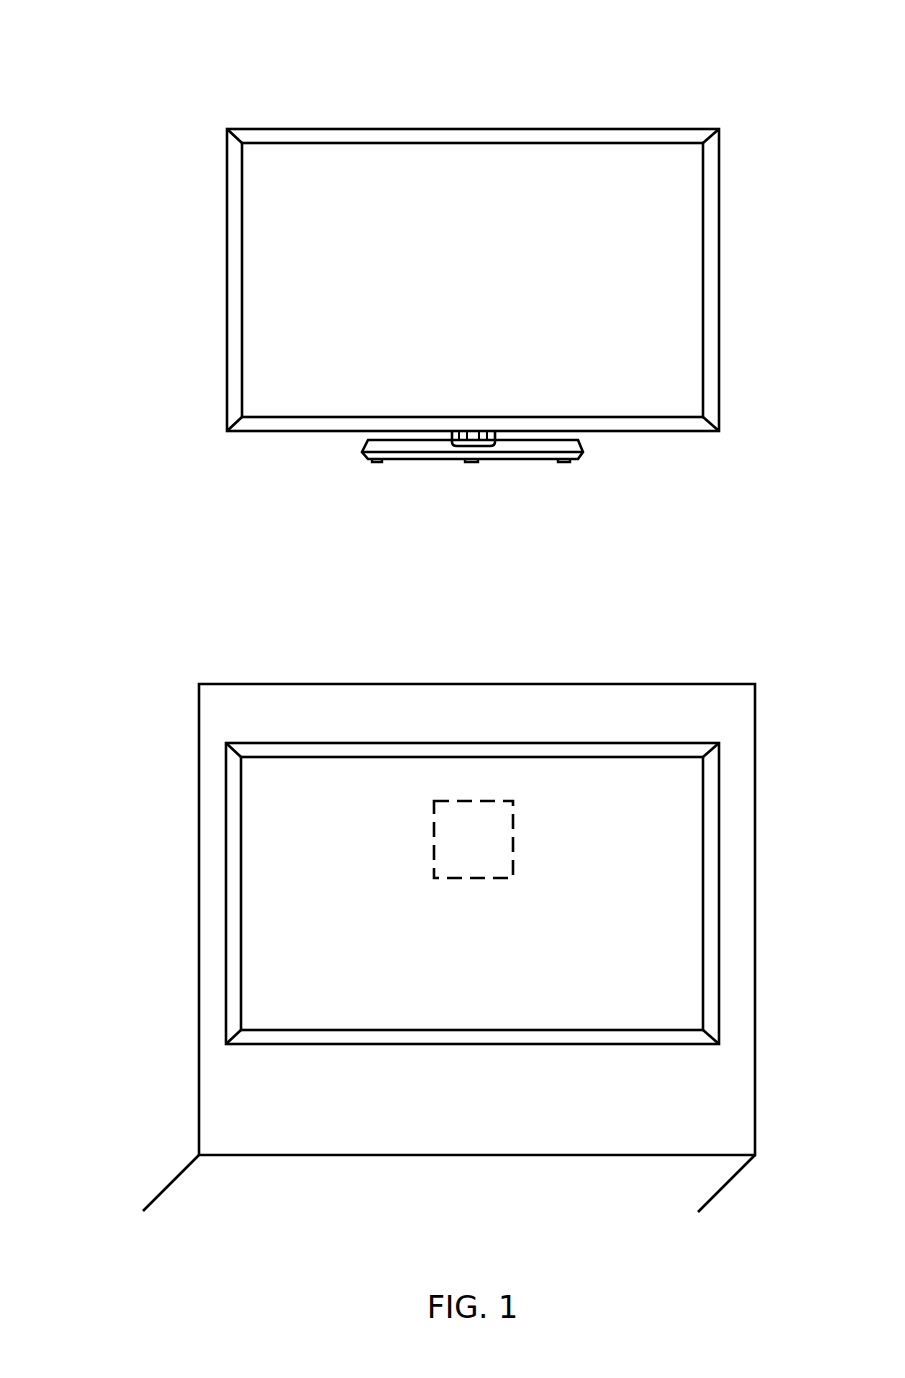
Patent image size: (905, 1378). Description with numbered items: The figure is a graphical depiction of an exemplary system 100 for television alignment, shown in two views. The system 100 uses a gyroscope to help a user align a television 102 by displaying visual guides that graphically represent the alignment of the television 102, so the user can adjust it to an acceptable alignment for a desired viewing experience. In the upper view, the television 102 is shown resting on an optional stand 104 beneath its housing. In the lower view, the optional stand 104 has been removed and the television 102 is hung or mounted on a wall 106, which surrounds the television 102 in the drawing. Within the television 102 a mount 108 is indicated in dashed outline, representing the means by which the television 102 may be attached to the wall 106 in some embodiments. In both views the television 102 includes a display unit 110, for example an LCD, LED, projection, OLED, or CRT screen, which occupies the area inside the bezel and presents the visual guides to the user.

The system for television alignment 100 is at (125, 73).
The television 102 is at (720, 158).
The stand 104 is at (584, 452).
The wall 106 is at (199, 843).
The mount 108 is at (477, 800).
The display unit 110 is at (680, 297).